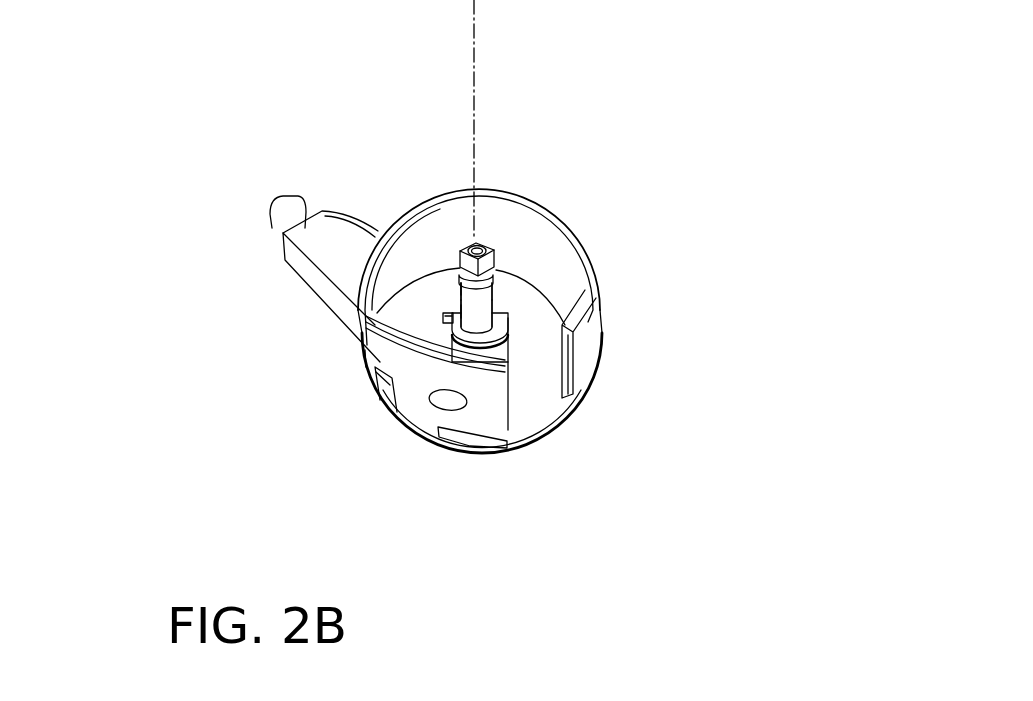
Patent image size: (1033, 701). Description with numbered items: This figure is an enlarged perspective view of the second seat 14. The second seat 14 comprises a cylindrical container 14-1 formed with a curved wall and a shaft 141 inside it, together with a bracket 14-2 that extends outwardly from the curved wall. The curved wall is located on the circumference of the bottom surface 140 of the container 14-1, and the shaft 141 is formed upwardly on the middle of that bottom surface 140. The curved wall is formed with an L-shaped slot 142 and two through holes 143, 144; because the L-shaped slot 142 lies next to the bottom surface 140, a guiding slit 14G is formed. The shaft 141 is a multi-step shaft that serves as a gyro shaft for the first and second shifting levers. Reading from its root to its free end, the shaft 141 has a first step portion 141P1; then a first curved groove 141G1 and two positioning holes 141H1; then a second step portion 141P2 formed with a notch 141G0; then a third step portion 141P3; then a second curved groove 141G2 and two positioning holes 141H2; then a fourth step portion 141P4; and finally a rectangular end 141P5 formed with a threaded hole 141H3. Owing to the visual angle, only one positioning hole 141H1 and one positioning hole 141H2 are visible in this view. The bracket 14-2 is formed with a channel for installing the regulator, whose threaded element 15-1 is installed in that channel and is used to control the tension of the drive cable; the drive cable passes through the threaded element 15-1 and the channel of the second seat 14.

The second seat 14 is at (309, 442).
The cylindrical container 14-1 is at (367, 375).
The bracket 14-2 is at (331, 313).
The threaded element 15-1 is at (278, 228).
The bottom surface 140 is at (532, 363).
The shaft 141 is at (480, 234).
The positioning holes 141H1 is at (448, 320).
The positioning holes 141H2 is at (462, 288).
The threaded hole 141H3 is at (492, 256).
The notch 141G0 is at (460, 313).
The first curved groove 141G1 is at (510, 340).
The second curved groove 141G2 is at (497, 284).
The first step portion 141P1 is at (510, 333).
The second step portion 141P2 is at (512, 324).
The third step portion 141P3 is at (482, 308).
The fourth step portion 141P4 is at (496, 276).
The rectangular end 141P5 is at (497, 266).
The L-shaped slot 142 is at (571, 383).
The through hole 143 is at (457, 409).
The through hole 144 is at (376, 370).
The guiding slit 14G is at (443, 440).